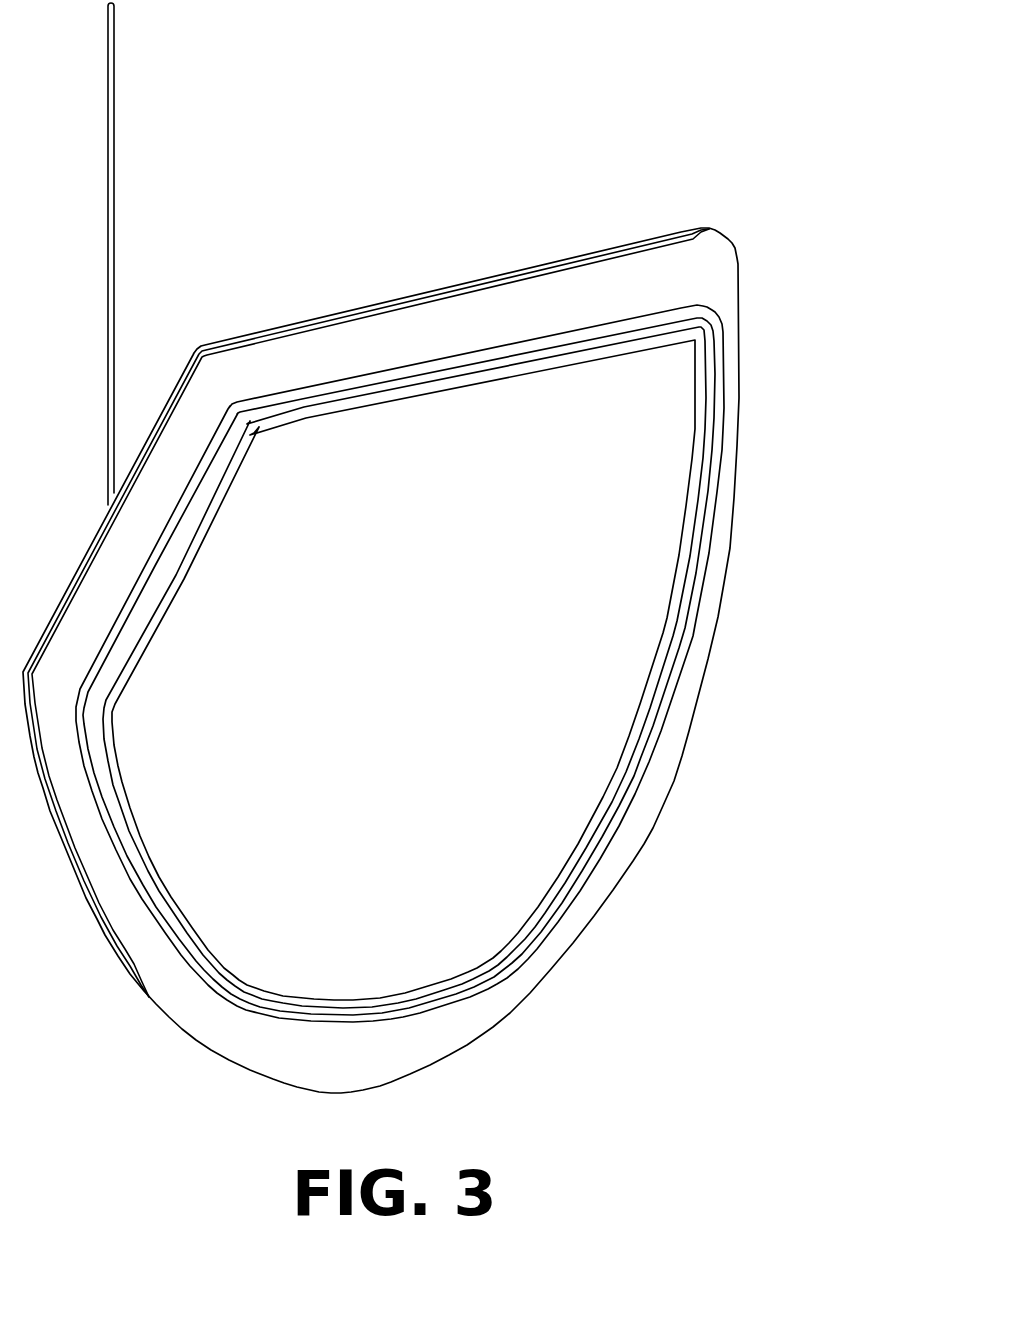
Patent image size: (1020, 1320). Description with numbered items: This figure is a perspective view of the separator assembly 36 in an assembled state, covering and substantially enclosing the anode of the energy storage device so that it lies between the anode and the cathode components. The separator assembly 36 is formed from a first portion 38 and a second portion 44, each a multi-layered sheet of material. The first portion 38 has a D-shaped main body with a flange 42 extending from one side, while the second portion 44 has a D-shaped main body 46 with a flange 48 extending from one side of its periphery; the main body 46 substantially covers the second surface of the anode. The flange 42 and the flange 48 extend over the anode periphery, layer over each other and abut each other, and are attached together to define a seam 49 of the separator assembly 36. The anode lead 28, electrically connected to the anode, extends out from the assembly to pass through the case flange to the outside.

The anode lead 28 is at (116, 103).
The separator assembly 36 is at (565, 923).
The first portion 38 is at (319, 362).
The flange 42 is at (160, 384).
The second portion 44 is at (608, 663).
The main body 46 is at (485, 704).
The flange 48 is at (648, 285).
The seam 49 is at (428, 290).